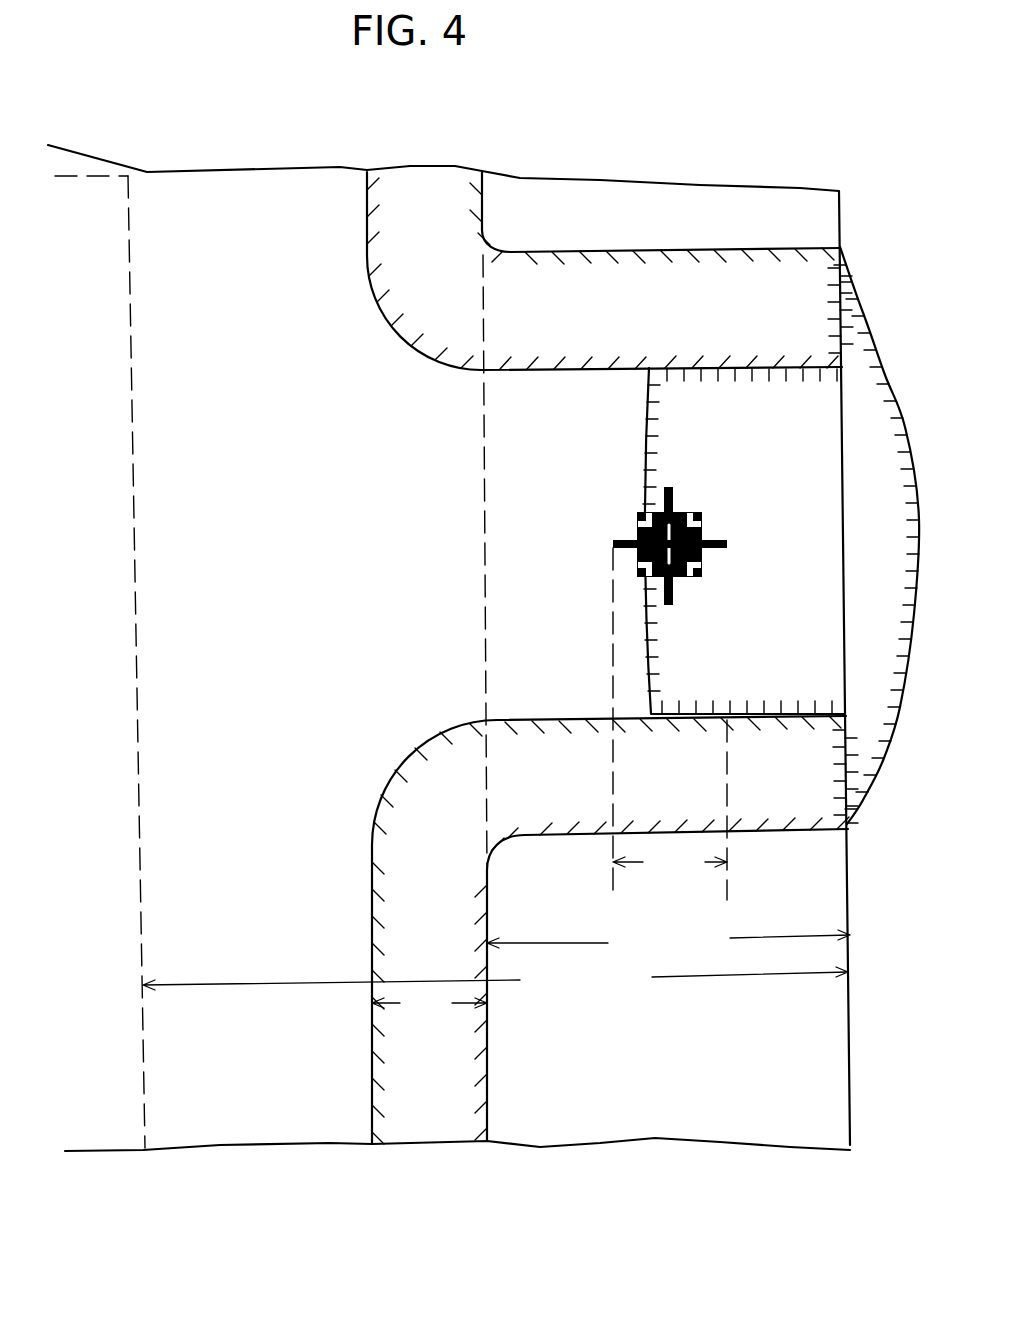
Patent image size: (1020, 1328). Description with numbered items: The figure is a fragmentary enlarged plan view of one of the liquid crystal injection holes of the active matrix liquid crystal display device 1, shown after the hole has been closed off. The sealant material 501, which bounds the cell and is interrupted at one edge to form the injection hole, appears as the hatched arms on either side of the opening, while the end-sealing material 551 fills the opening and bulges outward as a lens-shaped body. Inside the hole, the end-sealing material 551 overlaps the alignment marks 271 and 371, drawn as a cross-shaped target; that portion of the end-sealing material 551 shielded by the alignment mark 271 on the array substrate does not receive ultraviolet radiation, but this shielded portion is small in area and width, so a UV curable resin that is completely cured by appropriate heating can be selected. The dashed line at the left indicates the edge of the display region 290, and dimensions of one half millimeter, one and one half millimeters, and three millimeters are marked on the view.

The active matrix liquid crystal display device 1 is at (483, 95).
The display region 290 is at (79, 193).
The alignment mark 271 is at (637, 530).
The alignment mark 371 is at (613, 543).
The sealant material 501 is at (684, 275).
The end-sealing material 551 is at (855, 314).